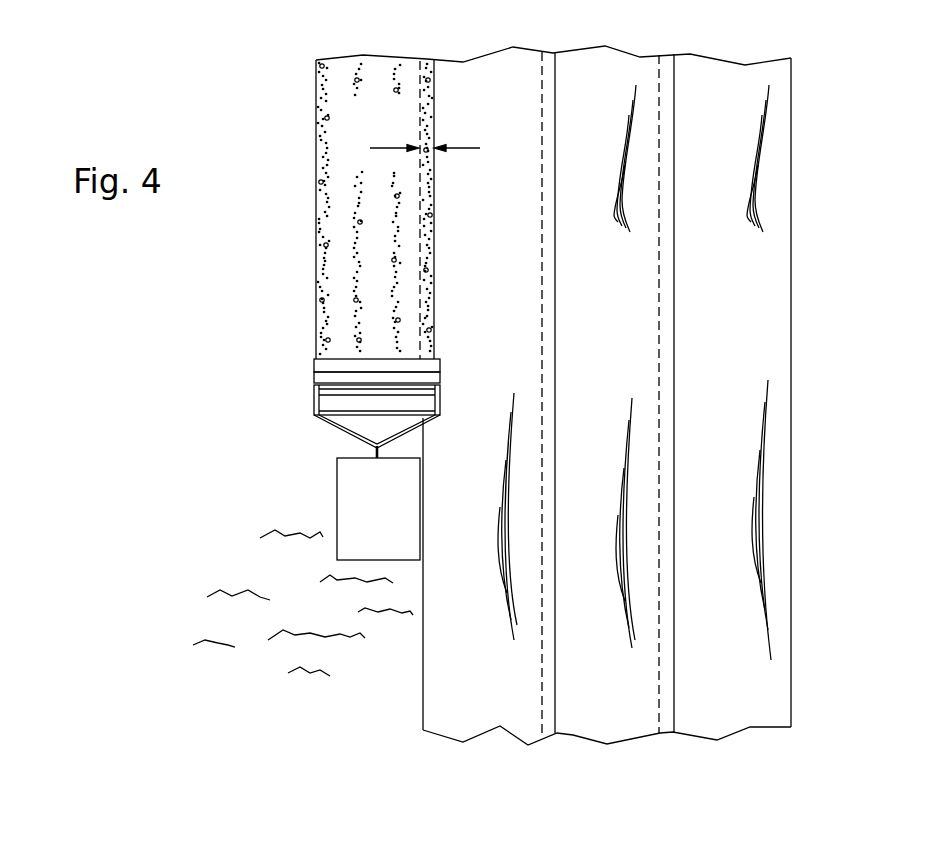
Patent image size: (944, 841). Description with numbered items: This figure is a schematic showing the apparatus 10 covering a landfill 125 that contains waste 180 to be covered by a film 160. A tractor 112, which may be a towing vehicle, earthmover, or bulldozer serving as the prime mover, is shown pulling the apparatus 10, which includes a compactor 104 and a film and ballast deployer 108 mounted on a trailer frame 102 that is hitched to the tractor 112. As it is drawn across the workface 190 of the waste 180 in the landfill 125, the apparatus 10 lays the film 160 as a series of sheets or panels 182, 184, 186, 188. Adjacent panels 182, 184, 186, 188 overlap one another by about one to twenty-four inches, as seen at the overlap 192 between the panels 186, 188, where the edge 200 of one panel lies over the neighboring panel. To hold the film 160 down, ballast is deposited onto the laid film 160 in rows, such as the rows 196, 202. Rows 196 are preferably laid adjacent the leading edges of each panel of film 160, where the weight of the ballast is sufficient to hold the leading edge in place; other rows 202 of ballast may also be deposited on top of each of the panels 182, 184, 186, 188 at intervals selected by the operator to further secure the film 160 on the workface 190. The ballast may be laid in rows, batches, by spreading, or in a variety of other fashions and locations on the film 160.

The apparatus 10 is at (315, 449).
The trailer frame 102 is at (345, 435).
The compactor 104 is at (320, 400).
The film and ballast deployer 108 is at (316, 362).
The tractor 112 is at (363, 502).
The landfill 125 is at (183, 310).
The film 160 is at (458, 686).
The waste 180 is at (283, 630).
The panel of film 182 is at (744, 340).
The panel of film 184 is at (621, 340).
The panel of film 186 is at (509, 340).
The panel of film 188 is at (393, 131).
The workface 190 is at (300, 560).
The overlap 192 is at (432, 147).
The row of ballast 196 is at (316, 165).
The right boundary 200 is at (433, 236).
The row of ballast 202 is at (393, 250).